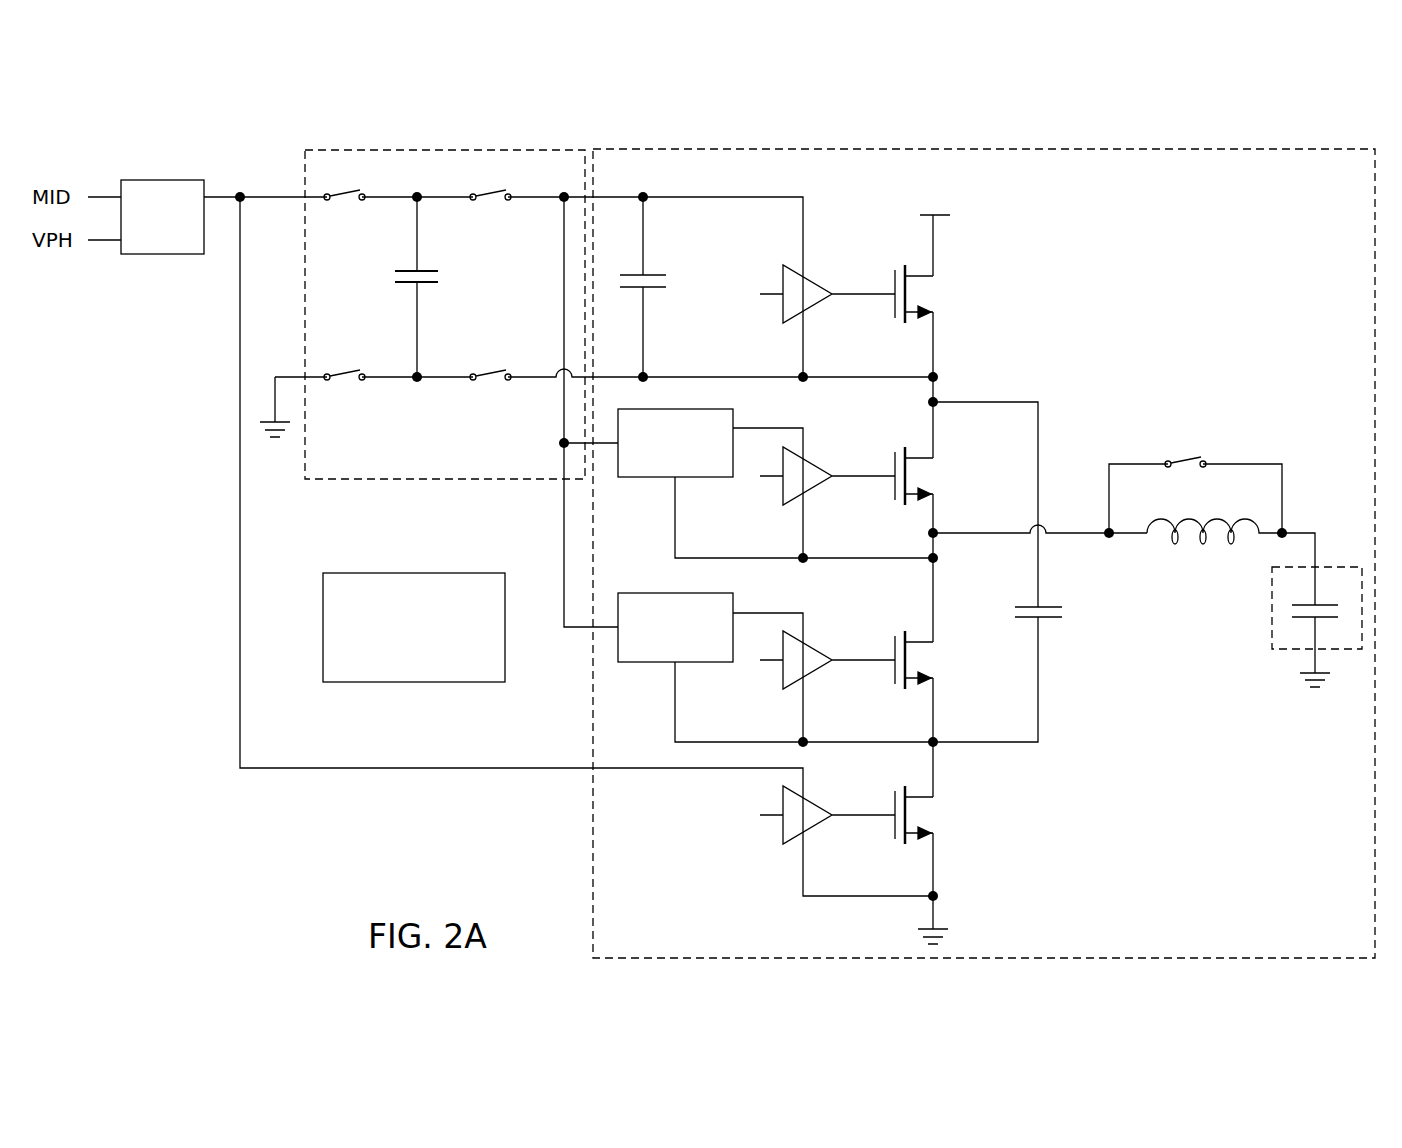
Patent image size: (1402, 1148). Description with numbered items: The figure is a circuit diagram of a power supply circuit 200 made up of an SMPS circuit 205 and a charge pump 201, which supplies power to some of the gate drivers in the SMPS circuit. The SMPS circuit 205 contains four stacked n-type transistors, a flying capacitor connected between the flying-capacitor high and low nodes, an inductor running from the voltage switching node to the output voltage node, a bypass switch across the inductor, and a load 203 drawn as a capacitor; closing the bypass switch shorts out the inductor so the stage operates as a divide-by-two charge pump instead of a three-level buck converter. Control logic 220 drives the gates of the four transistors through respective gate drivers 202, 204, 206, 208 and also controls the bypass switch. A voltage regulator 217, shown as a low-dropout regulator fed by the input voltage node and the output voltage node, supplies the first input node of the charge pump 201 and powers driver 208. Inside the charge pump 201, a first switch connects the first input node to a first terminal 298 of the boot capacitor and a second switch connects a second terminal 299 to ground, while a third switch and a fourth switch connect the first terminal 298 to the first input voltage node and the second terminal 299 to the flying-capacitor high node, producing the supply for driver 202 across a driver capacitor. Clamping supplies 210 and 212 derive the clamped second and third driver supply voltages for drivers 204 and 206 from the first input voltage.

The power supply circuit 200 is at (330, 106).
The voltage regulator 217 is at (173, 180).
The charge pump 201 is at (526, 150).
The SMPS circuit 205 is at (1245, 149).
The first terminal of capacitor Cboot 298 is at (417, 249).
The second terminal of capacitor Cboot 299 is at (417, 306).
The driver 202 is at (818, 302).
The driver 204 is at (818, 484).
The driver 206 is at (818, 668).
The driver 208 is at (818, 823).
The clamping supply 210 is at (735, 410).
The clamping supply 212 is at (735, 595).
The control logic 220 is at (472, 573).
The load 203 is at (1272, 626).